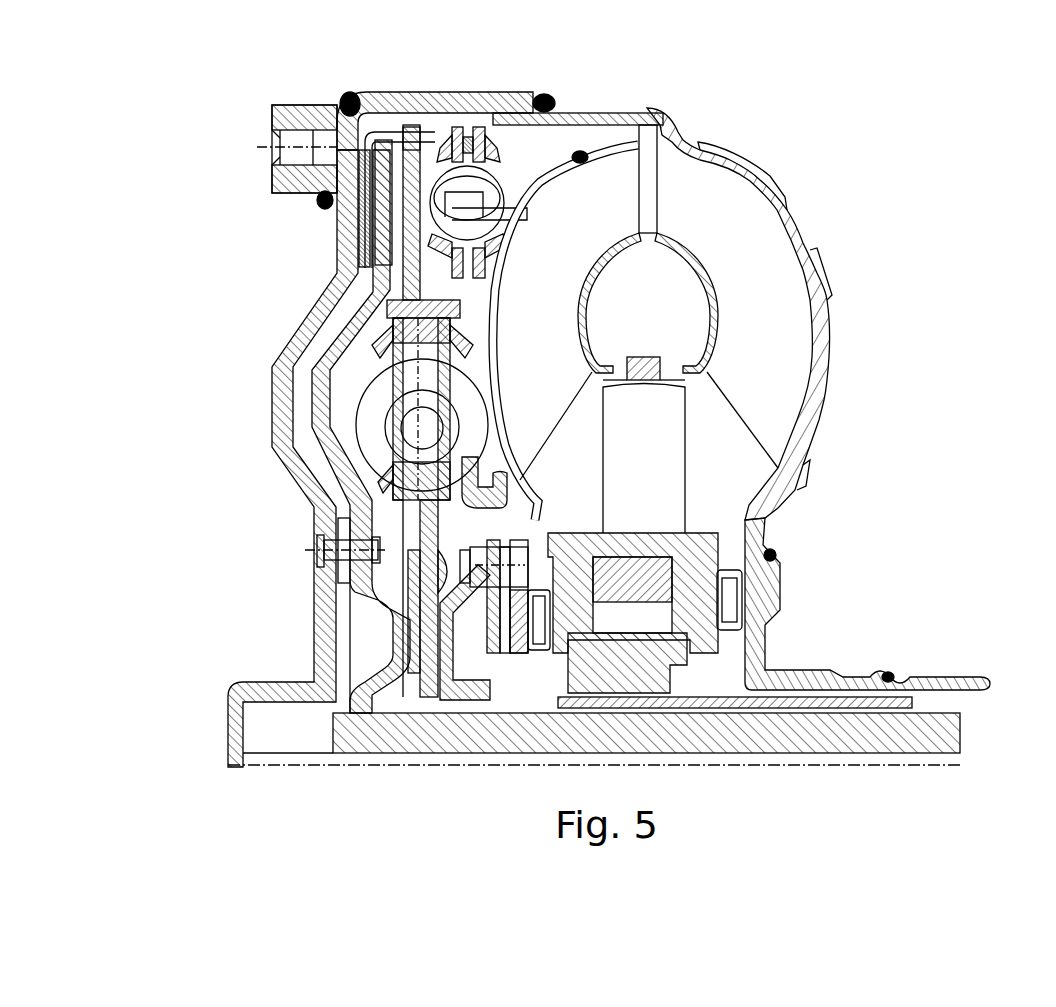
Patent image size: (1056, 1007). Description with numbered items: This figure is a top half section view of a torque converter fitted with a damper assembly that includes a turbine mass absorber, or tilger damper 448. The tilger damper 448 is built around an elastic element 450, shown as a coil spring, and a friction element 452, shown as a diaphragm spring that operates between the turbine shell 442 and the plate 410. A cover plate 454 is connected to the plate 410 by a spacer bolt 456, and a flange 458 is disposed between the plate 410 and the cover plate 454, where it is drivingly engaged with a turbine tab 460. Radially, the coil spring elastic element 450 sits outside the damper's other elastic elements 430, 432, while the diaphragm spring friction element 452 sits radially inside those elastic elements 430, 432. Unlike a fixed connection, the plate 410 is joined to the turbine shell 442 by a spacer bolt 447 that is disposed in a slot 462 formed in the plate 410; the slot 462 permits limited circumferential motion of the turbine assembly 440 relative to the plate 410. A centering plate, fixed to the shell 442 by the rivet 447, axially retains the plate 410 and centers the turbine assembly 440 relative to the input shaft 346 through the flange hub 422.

The input shaft 346 is at (577, 744).
The plate 410 is at (521, 485).
The flange hub 422 is at (513, 645).
The elastic element 430 is at (362, 405).
The elastic element 432 is at (373, 422).
The turbine assembly 440 is at (560, 192).
The turbine shell 442 is at (498, 413).
The spacer bolt 447 is at (520, 573).
The tilger damper 448 is at (505, 157).
The elastic element 450 is at (628, 138).
The friction element 452 is at (510, 640).
The cover plate 454 is at (508, 95).
The spacer bolt 456 is at (430, 133).
The flange 458 is at (465, 127).
The turbine tab 460 is at (677, 130).
The slot 462 is at (534, 524).